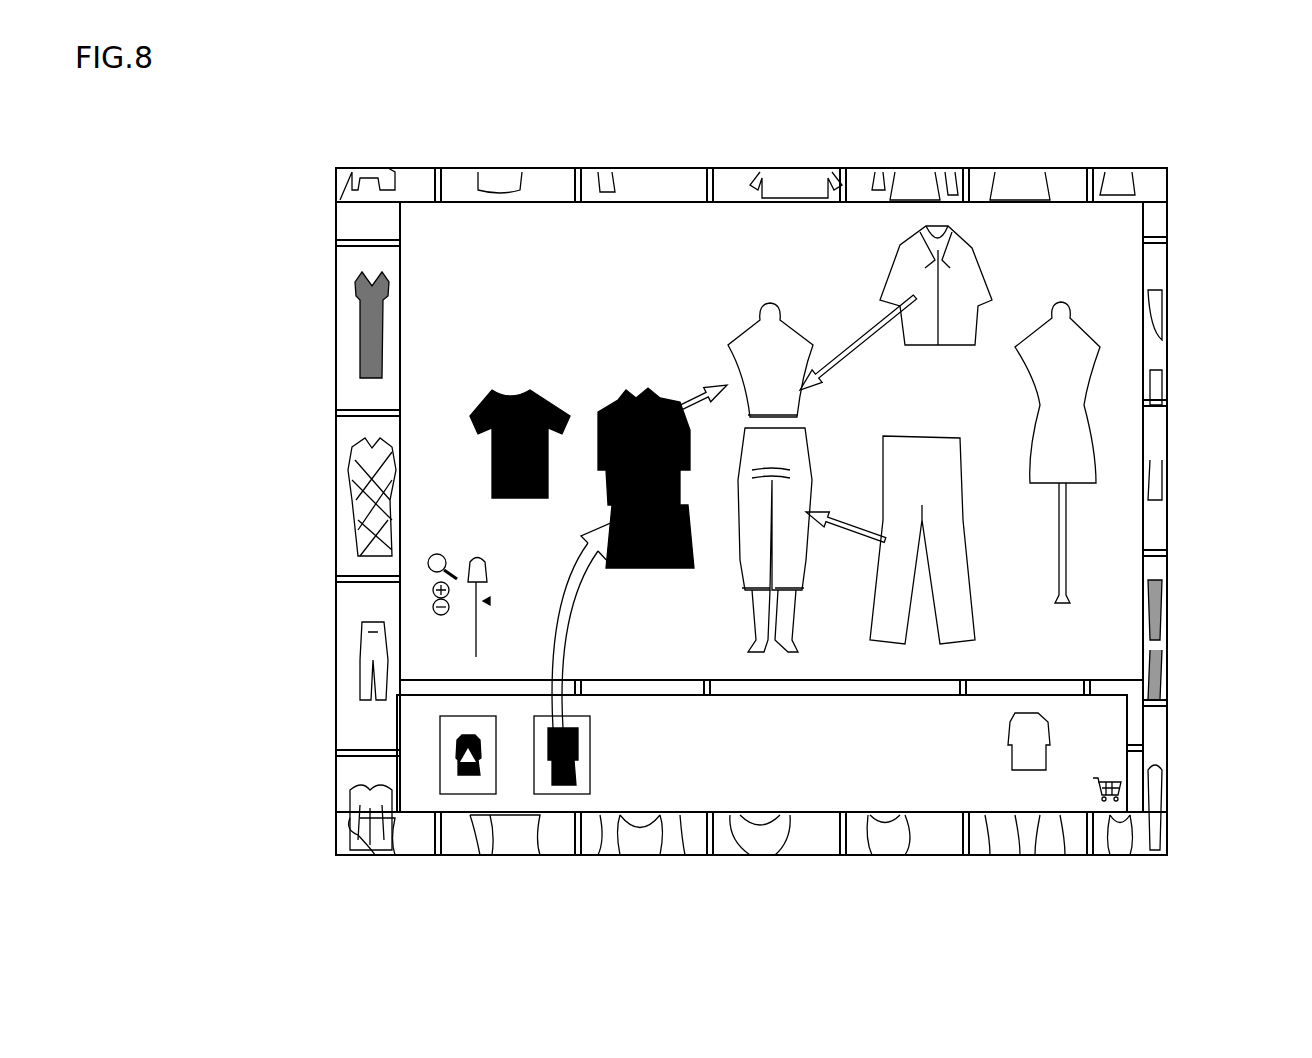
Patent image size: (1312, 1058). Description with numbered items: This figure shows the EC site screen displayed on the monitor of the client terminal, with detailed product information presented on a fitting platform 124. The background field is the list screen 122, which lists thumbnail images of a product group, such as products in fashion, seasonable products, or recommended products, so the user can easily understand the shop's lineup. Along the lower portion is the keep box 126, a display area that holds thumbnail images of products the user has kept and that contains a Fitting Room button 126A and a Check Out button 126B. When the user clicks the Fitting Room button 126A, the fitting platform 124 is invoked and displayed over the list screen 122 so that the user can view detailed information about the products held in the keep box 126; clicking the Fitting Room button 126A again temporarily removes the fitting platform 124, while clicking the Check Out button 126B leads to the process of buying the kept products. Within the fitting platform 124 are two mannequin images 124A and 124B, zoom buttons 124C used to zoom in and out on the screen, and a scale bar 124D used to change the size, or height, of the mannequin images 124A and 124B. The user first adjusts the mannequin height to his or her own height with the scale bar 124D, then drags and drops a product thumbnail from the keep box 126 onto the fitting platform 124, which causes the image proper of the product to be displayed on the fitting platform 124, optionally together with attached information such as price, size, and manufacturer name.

The list screen 122 is at (940, 164).
The fitting platform 124 is at (600, 199).
The mannequin image 124A is at (748, 335).
The mannequin image 124B is at (1058, 316).
The zoom buttons 124C is at (432, 598).
The scale bar 124D is at (475, 630).
The keep box 126 is at (823, 818).
The Fitting Room button 126A is at (1122, 746).
The Check Out button 126B is at (1125, 790).